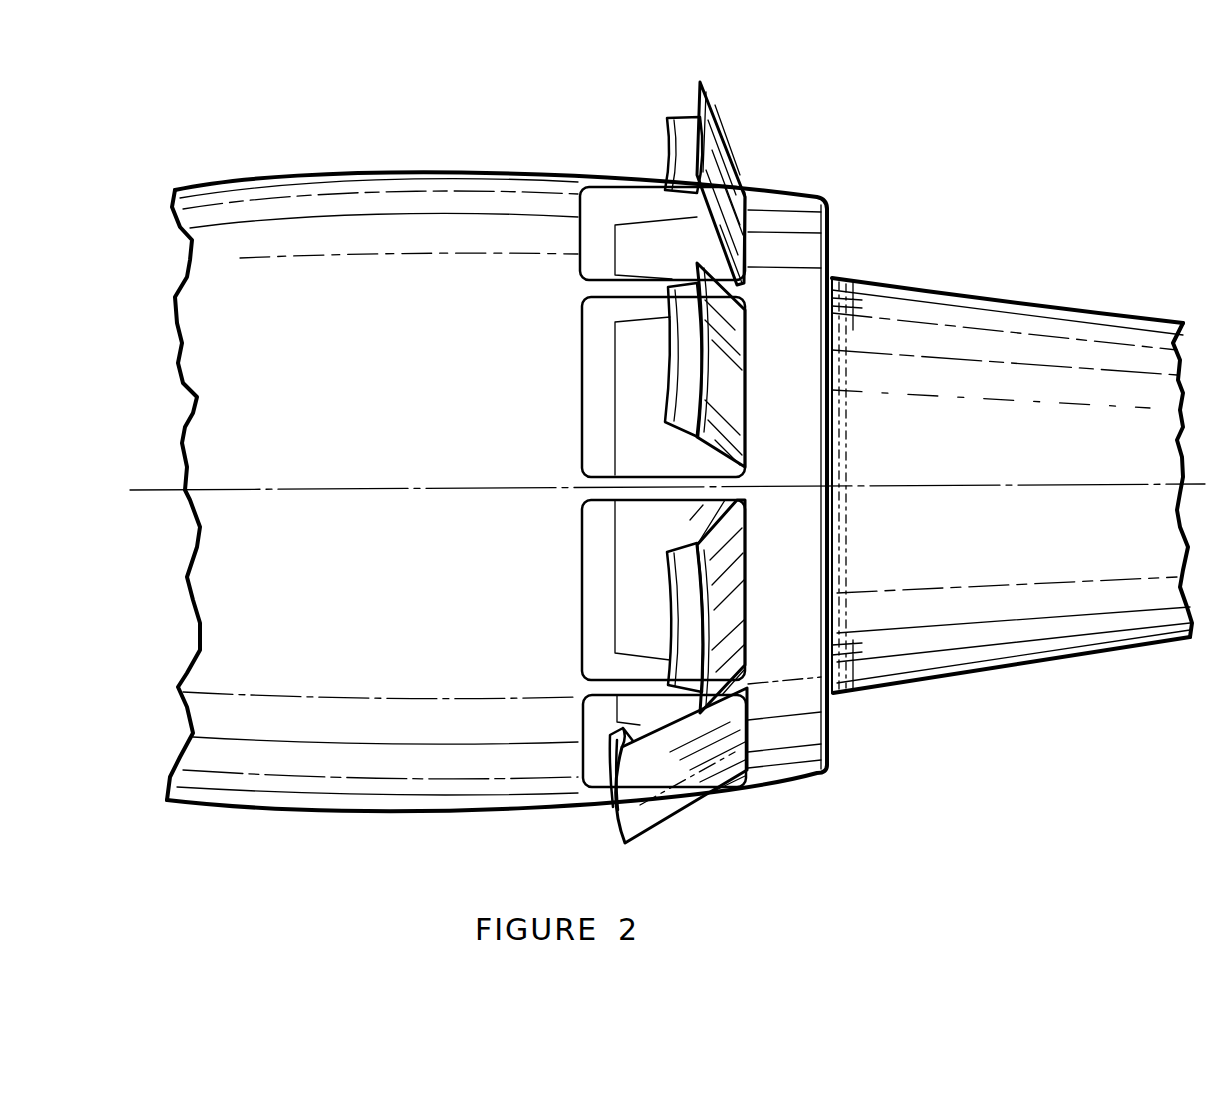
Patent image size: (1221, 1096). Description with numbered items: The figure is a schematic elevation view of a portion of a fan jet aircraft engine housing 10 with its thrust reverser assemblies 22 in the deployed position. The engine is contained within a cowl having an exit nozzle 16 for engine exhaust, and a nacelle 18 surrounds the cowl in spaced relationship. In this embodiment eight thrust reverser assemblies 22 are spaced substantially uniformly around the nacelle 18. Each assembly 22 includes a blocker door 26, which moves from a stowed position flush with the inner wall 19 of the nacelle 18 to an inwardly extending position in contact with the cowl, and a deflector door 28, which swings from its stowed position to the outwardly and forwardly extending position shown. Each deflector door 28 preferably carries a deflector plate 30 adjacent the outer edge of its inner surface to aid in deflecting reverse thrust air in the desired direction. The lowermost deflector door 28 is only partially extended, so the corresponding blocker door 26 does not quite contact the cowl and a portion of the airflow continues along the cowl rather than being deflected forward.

The engine housing 10 is at (506, 148).
The exit nozzle 16 is at (937, 288).
The nacelle 18 is at (324, 810).
The inner wall 19 is at (613, 268).
The thrust reverser assembly 22 is at (752, 157).
The blocker door 26 is at (700, 237).
The deflector door 28 is at (722, 128).
The deflector plate 30 is at (688, 130).